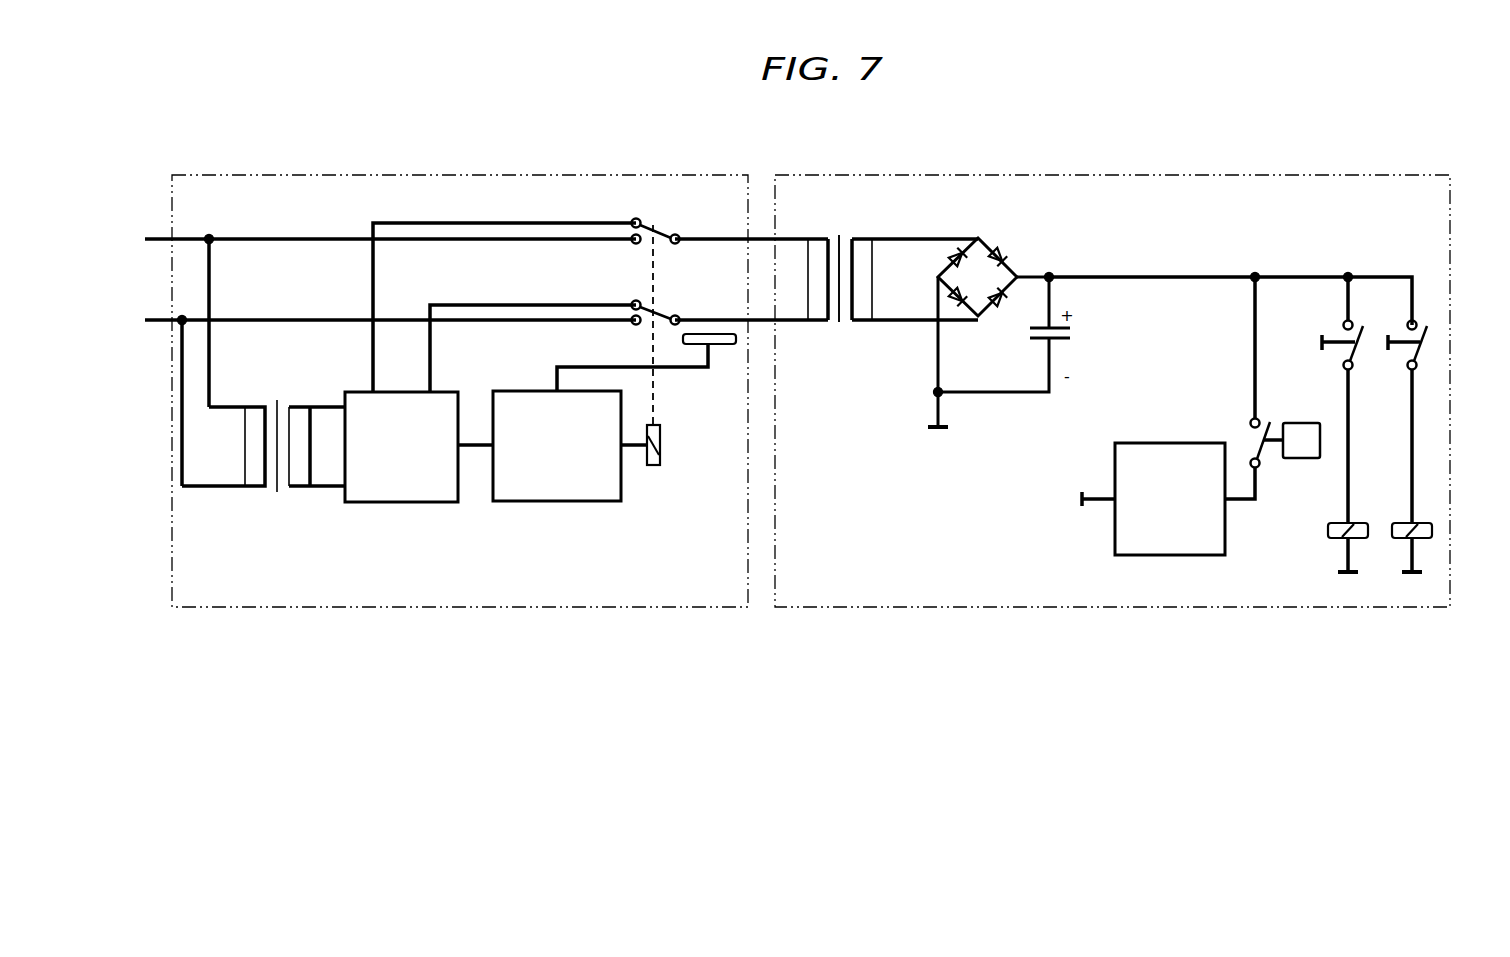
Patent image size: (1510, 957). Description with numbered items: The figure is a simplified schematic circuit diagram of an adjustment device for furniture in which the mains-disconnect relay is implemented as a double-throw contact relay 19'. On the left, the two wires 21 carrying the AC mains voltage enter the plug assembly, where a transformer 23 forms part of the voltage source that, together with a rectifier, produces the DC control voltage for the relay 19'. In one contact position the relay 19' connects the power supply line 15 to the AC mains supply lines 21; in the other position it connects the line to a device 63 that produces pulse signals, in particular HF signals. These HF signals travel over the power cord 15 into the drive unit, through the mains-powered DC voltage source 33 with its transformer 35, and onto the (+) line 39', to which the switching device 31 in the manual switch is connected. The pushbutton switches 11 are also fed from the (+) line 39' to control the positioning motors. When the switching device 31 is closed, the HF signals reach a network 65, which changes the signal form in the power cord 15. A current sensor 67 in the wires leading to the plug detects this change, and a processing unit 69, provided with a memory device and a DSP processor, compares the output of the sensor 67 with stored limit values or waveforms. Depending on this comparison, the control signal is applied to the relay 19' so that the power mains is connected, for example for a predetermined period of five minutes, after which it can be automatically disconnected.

The pushbutton switches 11 is at (1425, 340).
The power supply line 15 is at (761, 237).
The double-throw contact relay 19' is at (648, 474).
The wires carrying the AC mains voltage 21 is at (280, 238).
The transformer 23 is at (297, 490).
The switching device 31 is at (1300, 422).
The mains-powered DC voltage source 33 is at (858, 212).
The transformer 35 is at (818, 322).
The (+) line 39' is at (1230, 273).
The pulse signal device 63 is at (398, 504).
The network 65 is at (1160, 442).
The current sensor 67 is at (718, 348).
The processing unit 69 is at (556, 502).